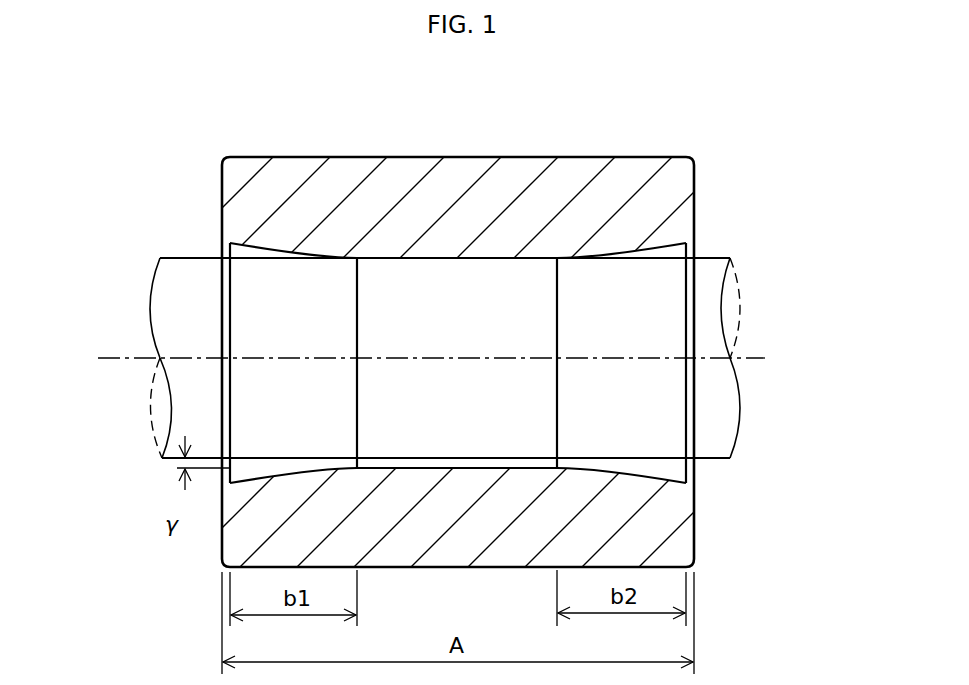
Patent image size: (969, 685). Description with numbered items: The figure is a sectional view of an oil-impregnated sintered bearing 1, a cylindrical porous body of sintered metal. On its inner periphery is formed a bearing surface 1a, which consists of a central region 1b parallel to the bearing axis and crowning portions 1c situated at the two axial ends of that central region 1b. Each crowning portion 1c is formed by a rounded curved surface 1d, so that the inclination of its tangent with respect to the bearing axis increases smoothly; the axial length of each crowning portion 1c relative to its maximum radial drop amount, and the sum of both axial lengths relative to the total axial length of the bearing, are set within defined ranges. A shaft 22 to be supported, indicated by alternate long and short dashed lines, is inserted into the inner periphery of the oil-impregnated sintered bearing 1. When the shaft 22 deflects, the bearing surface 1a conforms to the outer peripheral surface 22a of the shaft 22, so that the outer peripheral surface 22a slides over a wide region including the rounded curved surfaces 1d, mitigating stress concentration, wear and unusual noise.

The oil-impregnated sintered bearing 1 is at (484, 321).
The bearing surface 1a is at (477, 268).
The central region 1b is at (417, 262).
The crowning portion 1c is at (290, 264).
The rounded curved surface 1d is at (252, 250).
The shaft 22 is at (665, 317).
The outer peripheral surface 22a is at (680, 255).